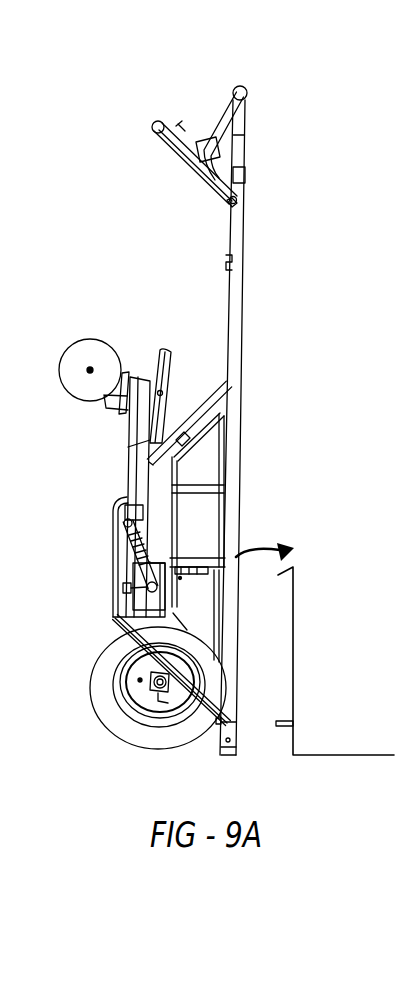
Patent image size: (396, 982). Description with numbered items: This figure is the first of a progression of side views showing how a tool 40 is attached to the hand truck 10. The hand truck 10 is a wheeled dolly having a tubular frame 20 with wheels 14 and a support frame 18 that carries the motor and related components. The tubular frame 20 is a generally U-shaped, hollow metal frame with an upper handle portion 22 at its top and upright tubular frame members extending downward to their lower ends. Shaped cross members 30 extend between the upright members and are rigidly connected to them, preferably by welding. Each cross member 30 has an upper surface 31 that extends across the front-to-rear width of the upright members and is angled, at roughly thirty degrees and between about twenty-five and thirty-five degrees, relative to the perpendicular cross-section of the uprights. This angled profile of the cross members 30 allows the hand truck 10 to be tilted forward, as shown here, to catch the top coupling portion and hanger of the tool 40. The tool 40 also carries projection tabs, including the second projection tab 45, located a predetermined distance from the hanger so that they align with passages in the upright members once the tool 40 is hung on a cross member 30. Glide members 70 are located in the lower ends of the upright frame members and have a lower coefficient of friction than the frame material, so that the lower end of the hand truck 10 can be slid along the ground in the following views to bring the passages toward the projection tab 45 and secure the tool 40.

The hand truck 10 is at (298, 107).
The wheels 14 is at (79, 402).
The support frame 18 is at (106, 537).
The tubular frame 20 is at (249, 157).
The upper handle portion 22 is at (247, 87).
The cross member 30 is at (236, 356).
The upper surface 31 is at (232, 357).
The tool 40 is at (295, 680).
The second projection tab 45 is at (280, 727).
The glide member 70 is at (234, 757).